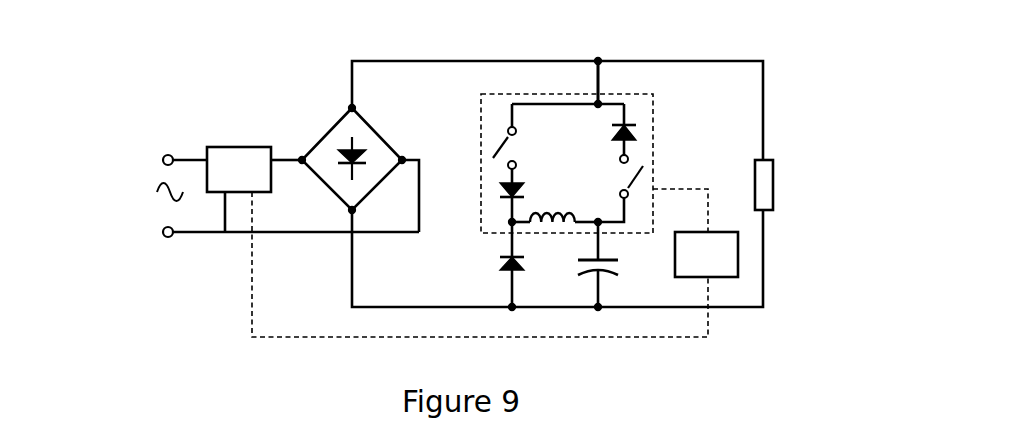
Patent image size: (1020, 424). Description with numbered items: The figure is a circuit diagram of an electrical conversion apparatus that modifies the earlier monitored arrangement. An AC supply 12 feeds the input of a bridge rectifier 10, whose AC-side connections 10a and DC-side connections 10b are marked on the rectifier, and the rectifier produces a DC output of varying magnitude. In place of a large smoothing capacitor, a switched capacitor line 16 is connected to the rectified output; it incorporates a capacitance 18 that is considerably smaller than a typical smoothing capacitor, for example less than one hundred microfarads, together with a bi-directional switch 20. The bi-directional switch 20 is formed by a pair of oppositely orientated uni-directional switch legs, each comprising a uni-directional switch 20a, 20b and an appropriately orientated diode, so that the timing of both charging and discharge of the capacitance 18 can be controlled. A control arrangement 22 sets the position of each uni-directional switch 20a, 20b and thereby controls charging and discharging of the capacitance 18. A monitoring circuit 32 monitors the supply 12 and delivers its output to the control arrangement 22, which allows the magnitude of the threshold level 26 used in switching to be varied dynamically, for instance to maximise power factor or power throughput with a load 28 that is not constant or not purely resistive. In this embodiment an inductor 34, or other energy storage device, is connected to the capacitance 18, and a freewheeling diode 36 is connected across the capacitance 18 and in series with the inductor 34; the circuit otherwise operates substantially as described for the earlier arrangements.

The supply 12 is at (153, 192).
The monitoring circuit 32 is at (239, 169).
The bridge rectifier 10 is at (337, 152).
The AC input terminals of bridge rectifier 10a is at (300, 157).
The DC output terminals of bridge rectifier 10b is at (347, 105).
The switched capacitor line 16 is at (597, 78).
The bi-directional switch 20 is at (584, 151).
The uni-directional switch 20a is at (496, 161).
The uni-directional switch 20b is at (643, 166).
The inductor 34 is at (552, 205).
The freewheeling diode 36 is at (500, 268).
The capacitance 18 is at (620, 266).
The control arrangement 22 is at (695, 233).
The threshold level 26 is at (250, 299).
The load 28 is at (780, 183).